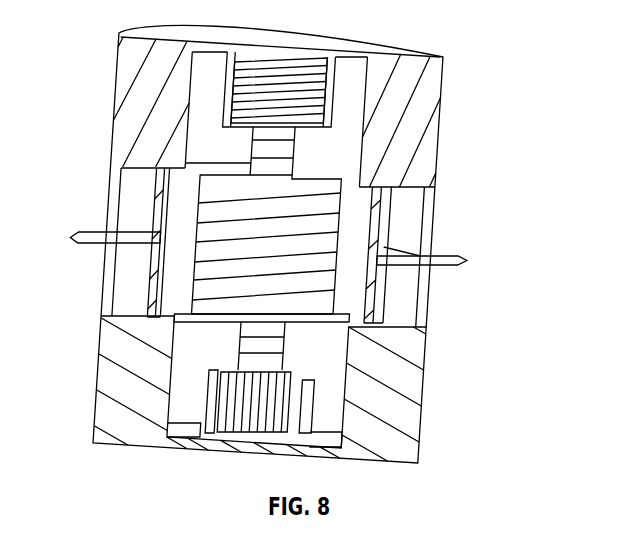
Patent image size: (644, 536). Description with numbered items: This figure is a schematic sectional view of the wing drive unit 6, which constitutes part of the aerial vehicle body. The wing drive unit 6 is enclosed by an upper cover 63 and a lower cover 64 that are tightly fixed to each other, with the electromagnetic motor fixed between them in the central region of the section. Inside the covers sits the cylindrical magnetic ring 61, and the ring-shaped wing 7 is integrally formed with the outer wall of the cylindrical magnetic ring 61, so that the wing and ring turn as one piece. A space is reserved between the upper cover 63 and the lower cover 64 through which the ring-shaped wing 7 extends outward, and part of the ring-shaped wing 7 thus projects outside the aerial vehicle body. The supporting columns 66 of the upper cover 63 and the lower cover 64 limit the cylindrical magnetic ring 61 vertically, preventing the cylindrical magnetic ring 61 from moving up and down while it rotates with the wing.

The wing drive unit 6 is at (188, 184).
The ring-shaped wing 7 is at (474, 253).
The cylindrical magnetic ring 61 is at (144, 280).
The upper cover 63 is at (445, 114).
The lower cover 64 is at (430, 407).
The supporting columns 66 is at (178, 104).